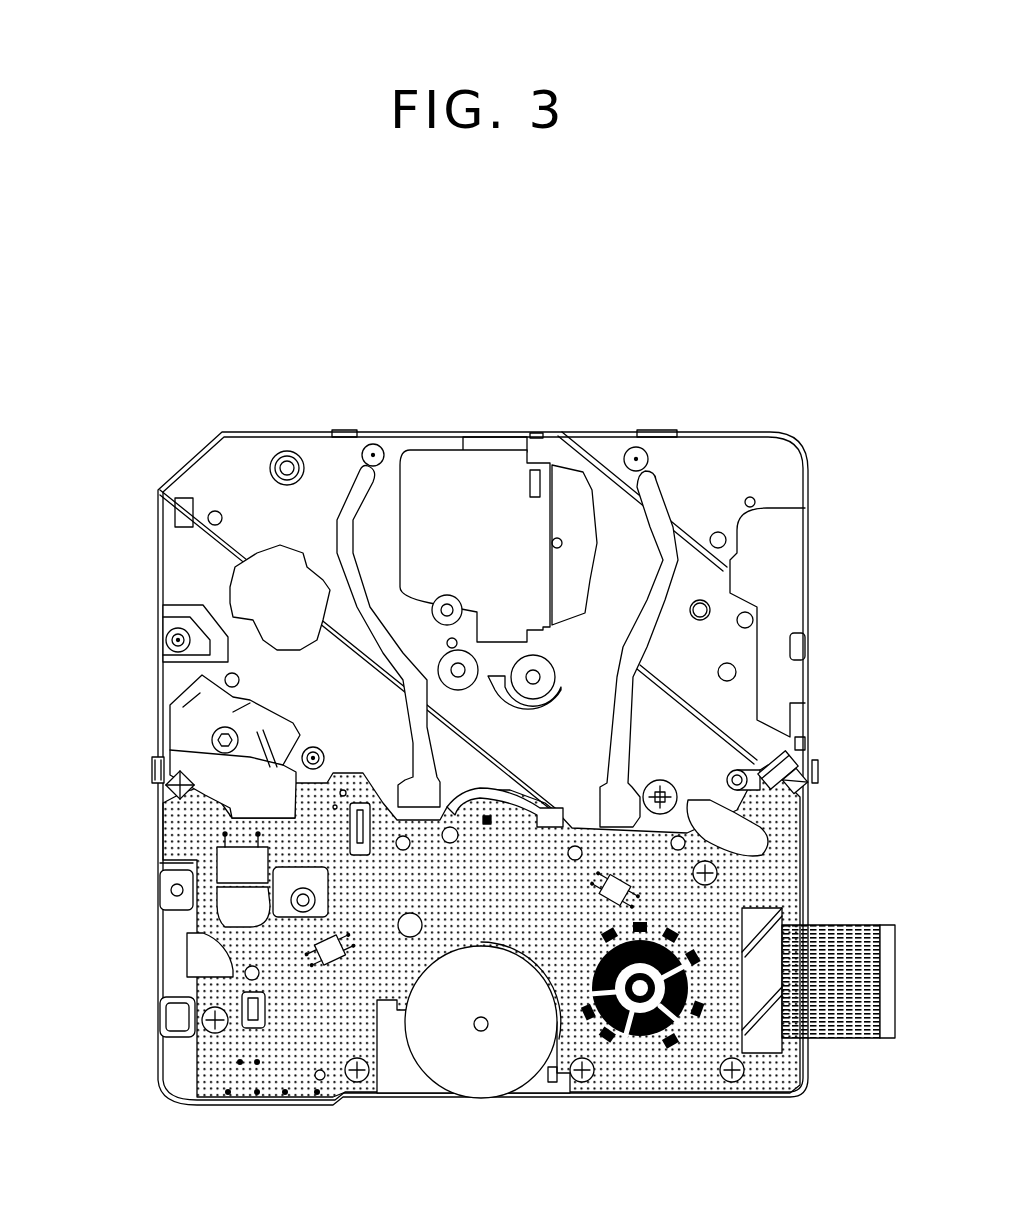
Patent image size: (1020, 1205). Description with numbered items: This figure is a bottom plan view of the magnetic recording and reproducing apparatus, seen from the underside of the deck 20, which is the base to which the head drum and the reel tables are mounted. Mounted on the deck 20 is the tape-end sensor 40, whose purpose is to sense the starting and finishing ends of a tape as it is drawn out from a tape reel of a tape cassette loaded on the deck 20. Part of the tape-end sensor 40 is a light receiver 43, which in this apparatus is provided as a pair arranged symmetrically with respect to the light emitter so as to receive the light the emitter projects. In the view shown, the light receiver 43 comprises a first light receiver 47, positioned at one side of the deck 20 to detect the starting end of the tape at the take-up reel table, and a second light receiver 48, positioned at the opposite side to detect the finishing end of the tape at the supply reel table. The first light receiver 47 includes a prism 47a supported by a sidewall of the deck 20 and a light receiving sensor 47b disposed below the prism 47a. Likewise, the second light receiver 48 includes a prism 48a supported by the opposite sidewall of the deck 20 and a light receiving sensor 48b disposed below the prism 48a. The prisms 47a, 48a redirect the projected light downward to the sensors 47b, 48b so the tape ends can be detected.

The deck 20 is at (664, 420).
The tape-end sensor 40 is at (280, 1080).
The light receiver 43 is at (852, 700).
The first light receiver 47 is at (165, 746).
The prism 47a is at (163, 752).
The light receiving sensor 47b is at (163, 777).
The second light receiver 48 is at (835, 763).
The prism 48a is at (800, 748).
The light receiving sensor 48b is at (803, 774).